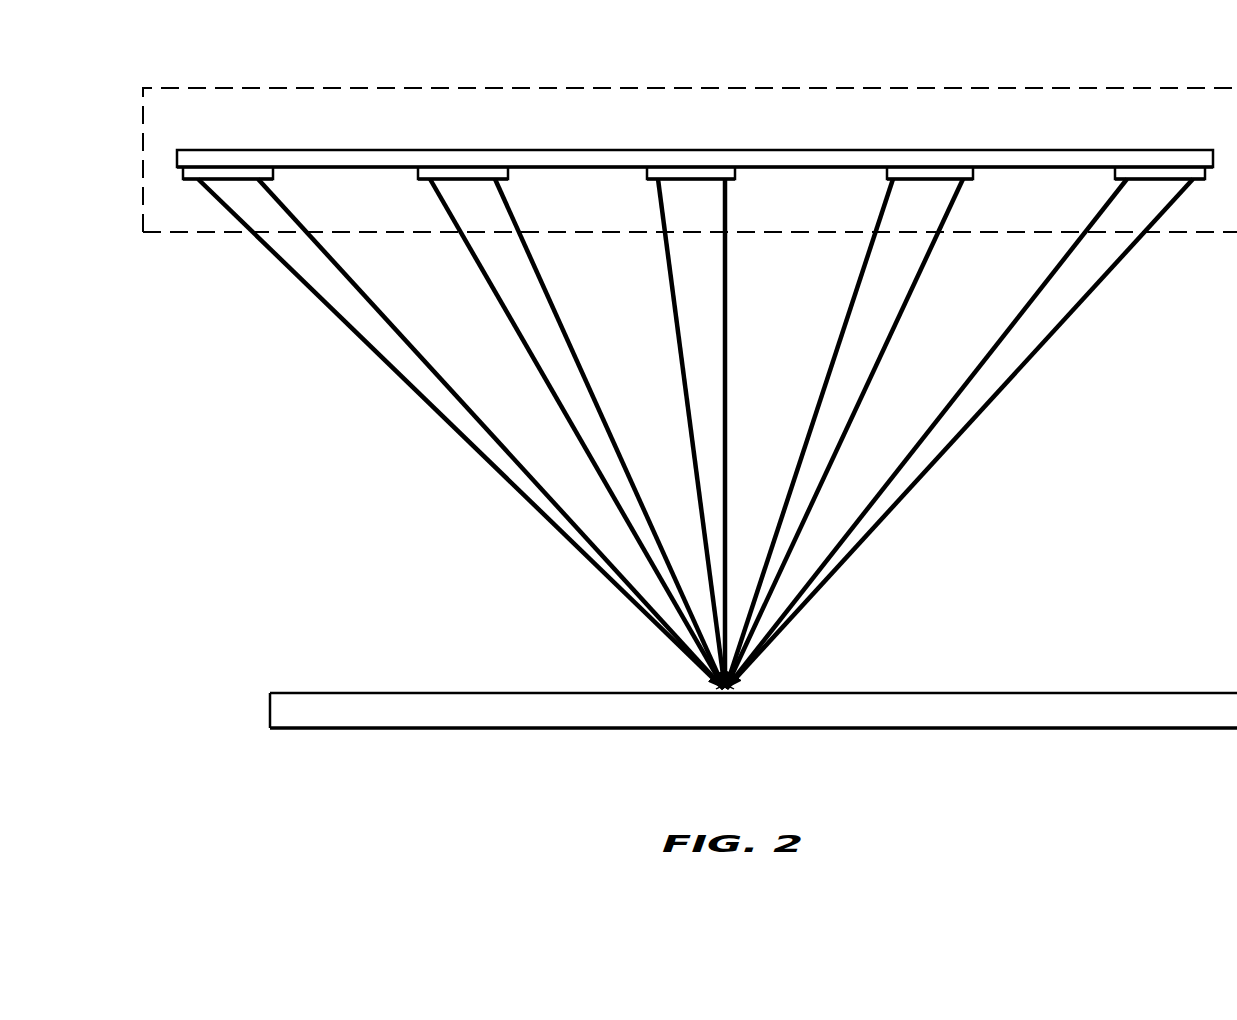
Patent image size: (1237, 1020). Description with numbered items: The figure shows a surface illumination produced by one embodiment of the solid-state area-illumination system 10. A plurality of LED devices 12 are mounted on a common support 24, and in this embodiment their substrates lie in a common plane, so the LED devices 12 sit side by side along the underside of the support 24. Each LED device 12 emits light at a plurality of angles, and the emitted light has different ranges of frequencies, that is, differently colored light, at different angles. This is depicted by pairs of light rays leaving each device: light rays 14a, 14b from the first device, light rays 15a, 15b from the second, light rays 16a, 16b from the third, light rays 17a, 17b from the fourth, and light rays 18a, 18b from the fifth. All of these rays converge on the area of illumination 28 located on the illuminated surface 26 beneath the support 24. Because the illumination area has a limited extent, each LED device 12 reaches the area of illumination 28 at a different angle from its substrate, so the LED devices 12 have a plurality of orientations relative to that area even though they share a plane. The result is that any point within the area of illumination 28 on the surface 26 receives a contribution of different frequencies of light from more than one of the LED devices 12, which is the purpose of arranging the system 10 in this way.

The solid-state area-illumination system 10 is at (910, 87).
The LED device 12 is at (227, 173).
The support 24 is at (597, 150).
The light ray 14a is at (322, 316).
The light ray 14b is at (372, 320).
The light ray 15a is at (502, 312).
The light ray 15b is at (552, 317).
The light ray 16a is at (671, 314).
The light ray 16b is at (720, 316).
The light ray 17a is at (848, 315).
The light ray 17b is at (885, 335).
The light ray 18a is at (1017, 313).
The light ray 18b is at (1058, 329).
The illuminated surface 26 is at (1095, 693).
The area of illumination 28 is at (725, 693).